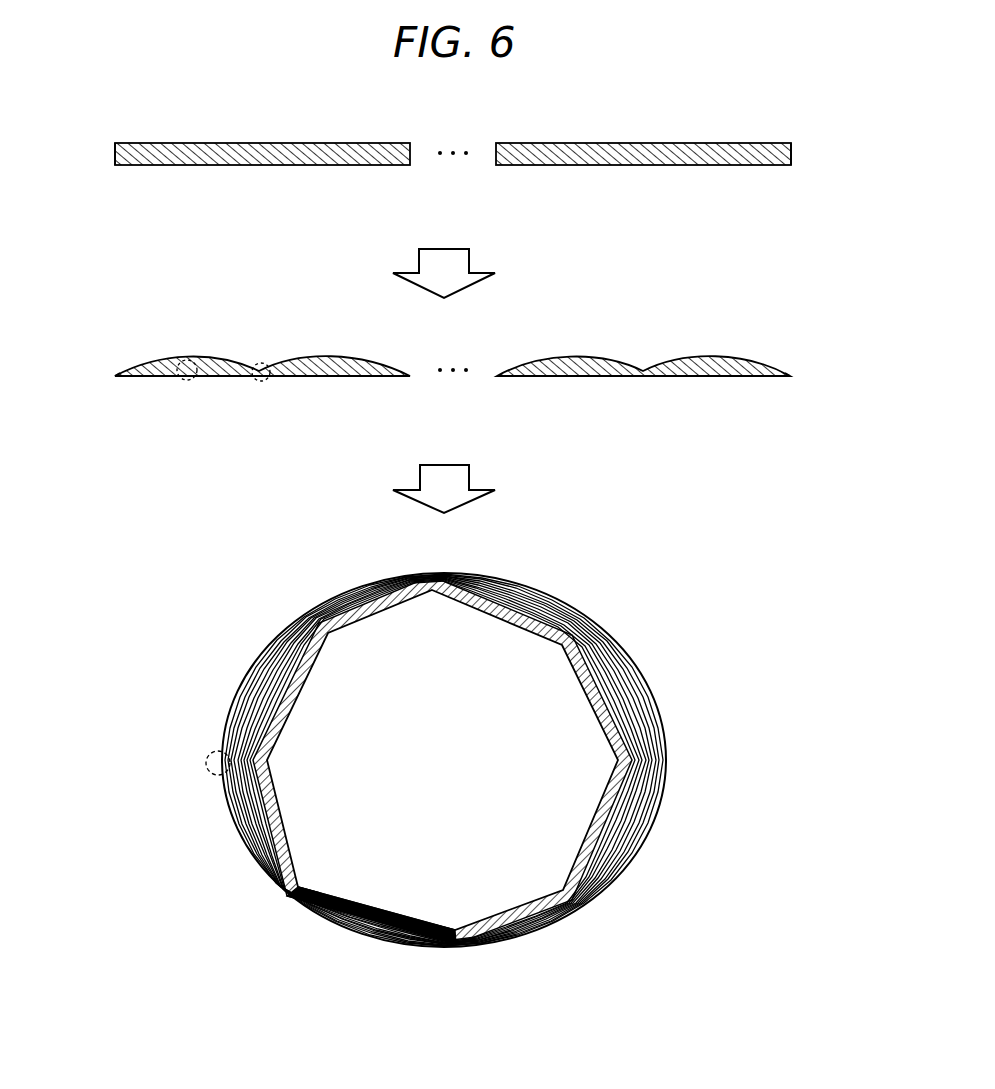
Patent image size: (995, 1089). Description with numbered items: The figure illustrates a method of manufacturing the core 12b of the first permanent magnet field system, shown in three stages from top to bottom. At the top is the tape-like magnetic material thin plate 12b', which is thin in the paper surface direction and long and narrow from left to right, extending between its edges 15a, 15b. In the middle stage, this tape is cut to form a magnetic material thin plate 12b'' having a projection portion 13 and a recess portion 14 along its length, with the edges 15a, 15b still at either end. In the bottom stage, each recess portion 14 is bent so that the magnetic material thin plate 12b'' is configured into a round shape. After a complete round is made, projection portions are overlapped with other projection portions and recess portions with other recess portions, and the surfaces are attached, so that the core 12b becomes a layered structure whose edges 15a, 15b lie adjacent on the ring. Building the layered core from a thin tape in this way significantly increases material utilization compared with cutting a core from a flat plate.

The core of first permanent magnet field system 12b is at (440, 760).
The tape-like magnetic material thin plate 12b' is at (453, 178).
The magnetic material thin plate 12b'' is at (452, 392).
The projection portion 13 is at (188, 359).
The recess portion 14 is at (261, 362).
The edge of tape-like magnetic material thin plate 15a is at (115, 150).
The edge of tape-like magnetic material thin plate 15b is at (791, 150).